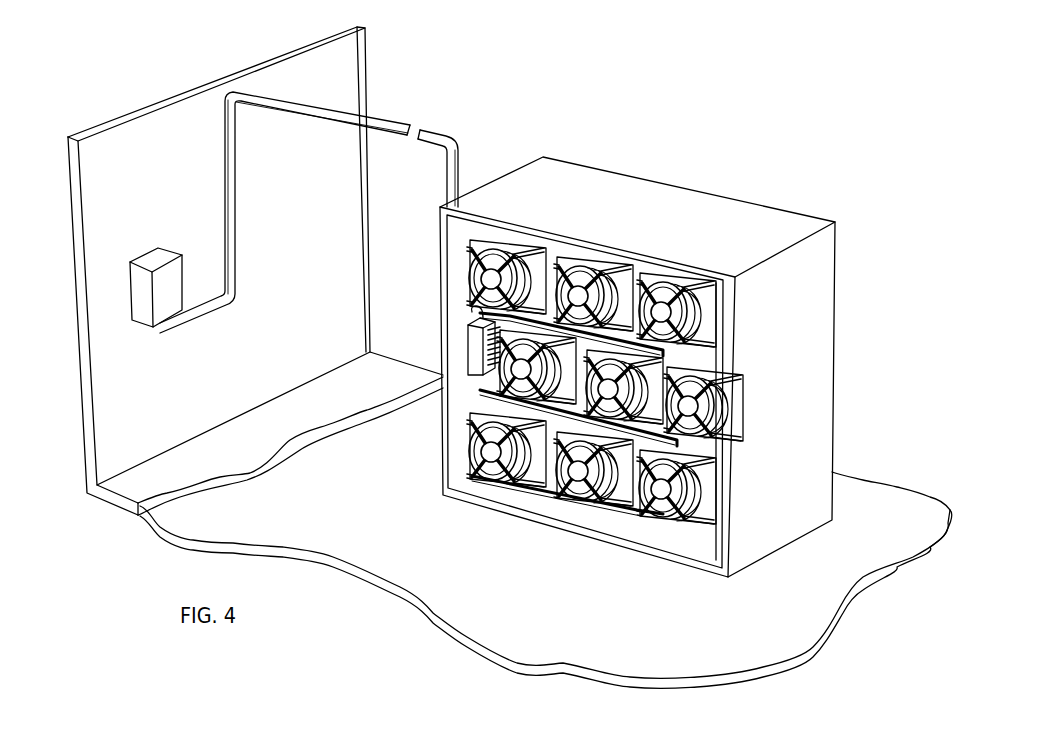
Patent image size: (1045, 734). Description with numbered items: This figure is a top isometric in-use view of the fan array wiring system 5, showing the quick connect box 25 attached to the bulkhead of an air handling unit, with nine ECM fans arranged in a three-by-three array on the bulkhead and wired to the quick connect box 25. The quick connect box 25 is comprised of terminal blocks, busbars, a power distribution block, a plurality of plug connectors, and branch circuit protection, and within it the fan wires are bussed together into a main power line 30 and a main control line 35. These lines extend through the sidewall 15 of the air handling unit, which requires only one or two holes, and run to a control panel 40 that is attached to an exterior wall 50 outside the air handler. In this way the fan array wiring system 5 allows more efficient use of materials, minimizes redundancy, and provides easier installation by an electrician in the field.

The fan array wiring system 5 is at (97, 70).
The sidewall of air handling unit 15 is at (659, 367).
The quick connect box 25 is at (473, 338).
The main power line 30 is at (338, 212).
The main control line 35 is at (445, 170).
The control panel 40 is at (163, 293).
The exterior wall 50 is at (353, 68).